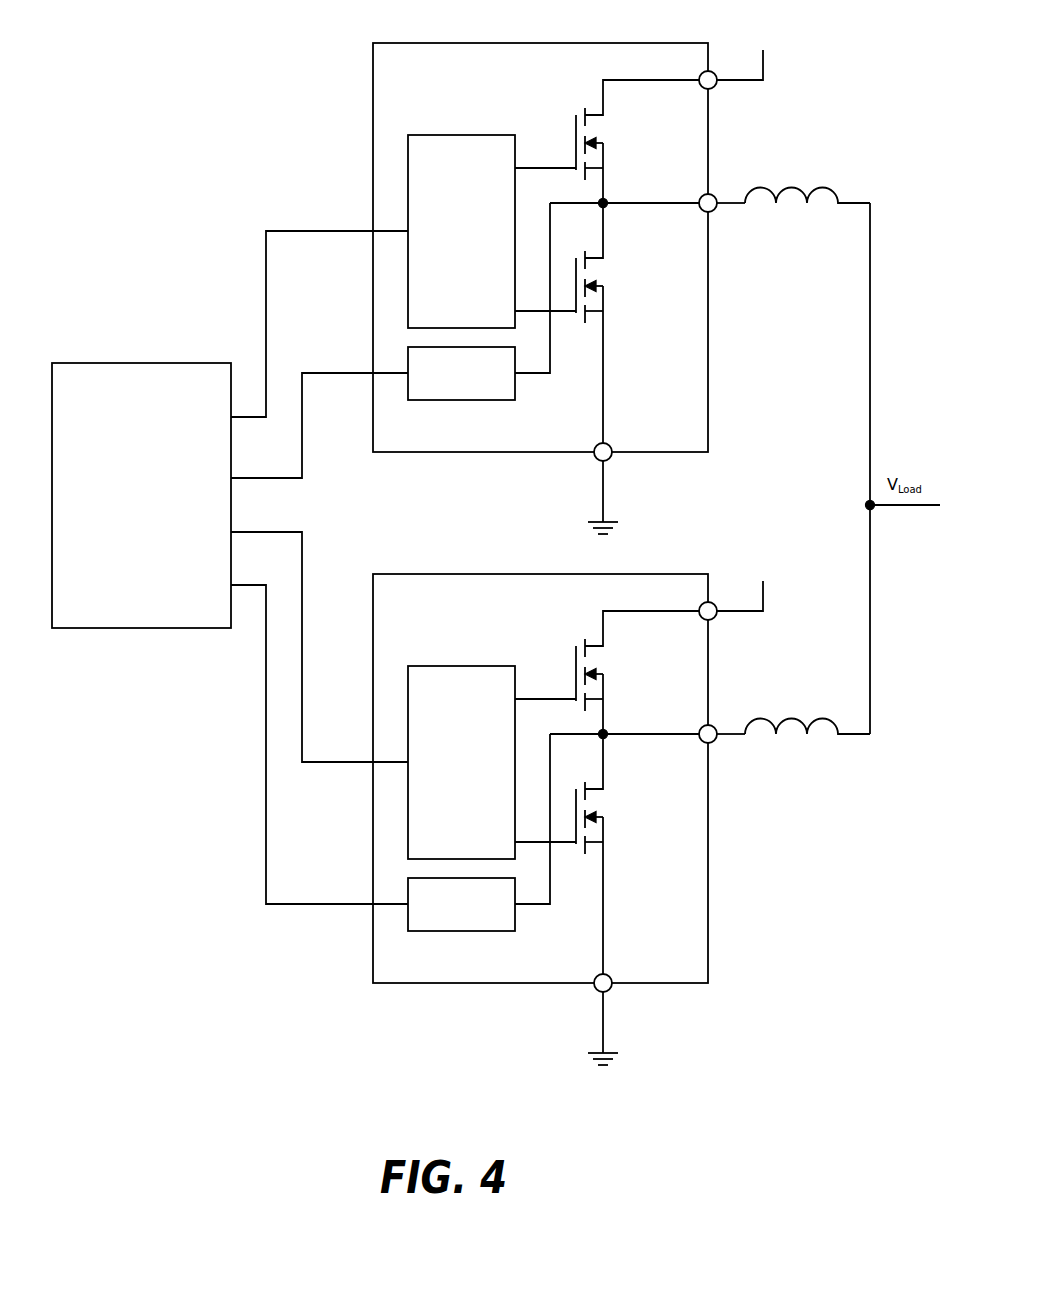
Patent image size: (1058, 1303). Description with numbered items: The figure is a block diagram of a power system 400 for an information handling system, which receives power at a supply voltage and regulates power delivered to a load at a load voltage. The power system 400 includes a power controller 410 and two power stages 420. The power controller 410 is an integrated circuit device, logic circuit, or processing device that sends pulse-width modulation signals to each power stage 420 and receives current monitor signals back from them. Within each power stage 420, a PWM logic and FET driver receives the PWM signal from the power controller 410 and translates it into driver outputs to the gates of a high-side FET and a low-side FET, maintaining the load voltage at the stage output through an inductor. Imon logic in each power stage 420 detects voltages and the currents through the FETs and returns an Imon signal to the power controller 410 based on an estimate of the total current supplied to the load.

The power system 400 is at (54, 1066).
The power controller 410 is at (65, 363).
The power stage 420 is at (612, 538).